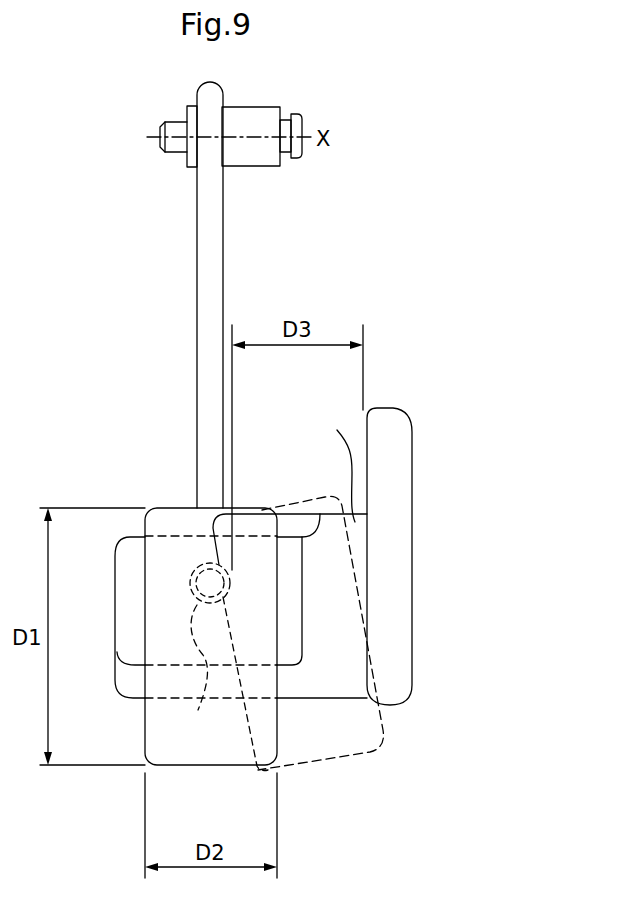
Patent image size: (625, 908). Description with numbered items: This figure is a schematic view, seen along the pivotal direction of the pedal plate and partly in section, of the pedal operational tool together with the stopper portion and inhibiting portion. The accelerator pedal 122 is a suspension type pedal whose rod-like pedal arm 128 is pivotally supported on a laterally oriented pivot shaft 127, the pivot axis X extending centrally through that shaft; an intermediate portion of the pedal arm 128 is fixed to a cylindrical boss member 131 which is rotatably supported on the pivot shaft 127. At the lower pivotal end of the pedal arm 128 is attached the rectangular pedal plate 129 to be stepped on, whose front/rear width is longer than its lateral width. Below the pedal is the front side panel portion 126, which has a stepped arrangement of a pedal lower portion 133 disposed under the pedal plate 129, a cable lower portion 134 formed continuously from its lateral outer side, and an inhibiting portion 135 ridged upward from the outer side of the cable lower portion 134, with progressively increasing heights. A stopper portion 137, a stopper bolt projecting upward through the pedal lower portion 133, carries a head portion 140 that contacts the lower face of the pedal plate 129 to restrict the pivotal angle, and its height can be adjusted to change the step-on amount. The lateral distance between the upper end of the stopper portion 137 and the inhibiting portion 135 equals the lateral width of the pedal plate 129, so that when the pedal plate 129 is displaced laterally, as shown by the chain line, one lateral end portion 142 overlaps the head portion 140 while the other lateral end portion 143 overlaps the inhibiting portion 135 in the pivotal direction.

The accelerator pedal 122 is at (150, 494).
The front side panel portion 126 is at (342, 537).
The pivot shaft 127 is at (175, 123).
The pedal arm 128 is at (206, 247).
The pedal plate 129 is at (176, 514).
The cylindrical boss member 131 is at (244, 112).
The pedal lower portion 133 is at (291, 548).
The cable lower portion 134 is at (337, 430).
The inhibiting portion 135 is at (393, 432).
The stopper portion 137 is at (210, 684).
The head portion 140 is at (210, 684).
The one lateral end portion 142 is at (213, 550).
The other lateral end portion 143 is at (372, 670).